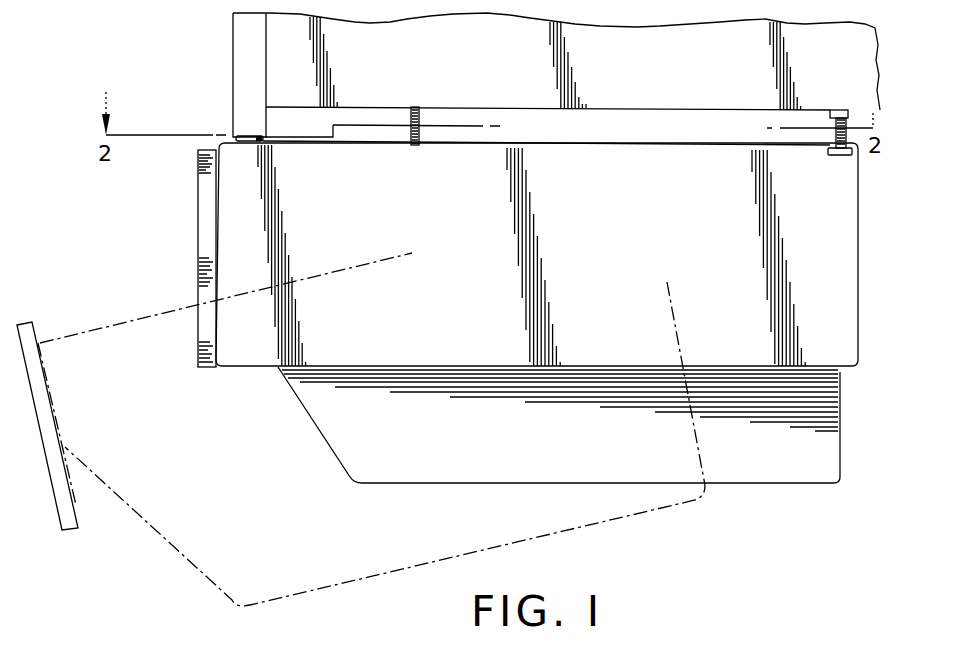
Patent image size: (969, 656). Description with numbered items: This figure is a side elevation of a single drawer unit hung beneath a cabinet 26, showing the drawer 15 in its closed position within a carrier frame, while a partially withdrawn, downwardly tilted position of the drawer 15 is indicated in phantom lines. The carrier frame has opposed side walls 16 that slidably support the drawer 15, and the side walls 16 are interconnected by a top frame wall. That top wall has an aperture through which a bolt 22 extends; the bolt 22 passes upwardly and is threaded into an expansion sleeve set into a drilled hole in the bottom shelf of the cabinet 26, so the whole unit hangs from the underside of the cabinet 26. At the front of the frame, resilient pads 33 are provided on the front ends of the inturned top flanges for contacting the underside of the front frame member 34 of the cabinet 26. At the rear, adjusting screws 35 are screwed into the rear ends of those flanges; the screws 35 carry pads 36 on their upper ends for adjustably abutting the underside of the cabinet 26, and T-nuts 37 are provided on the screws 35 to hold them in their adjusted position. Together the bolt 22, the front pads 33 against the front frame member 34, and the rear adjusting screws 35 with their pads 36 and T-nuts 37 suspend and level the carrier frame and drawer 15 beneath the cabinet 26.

The drawer 15 is at (305, 427).
The side walls 16 is at (528, 255).
The bolt 22 is at (419, 132).
The cabinet 26 is at (222, 50).
The resilient pads 33 is at (246, 140).
The front frame member 34 is at (241, 89).
The adjusting screws 35 is at (836, 133).
The pads 36 is at (838, 110).
The T-nuts 37 is at (846, 156).